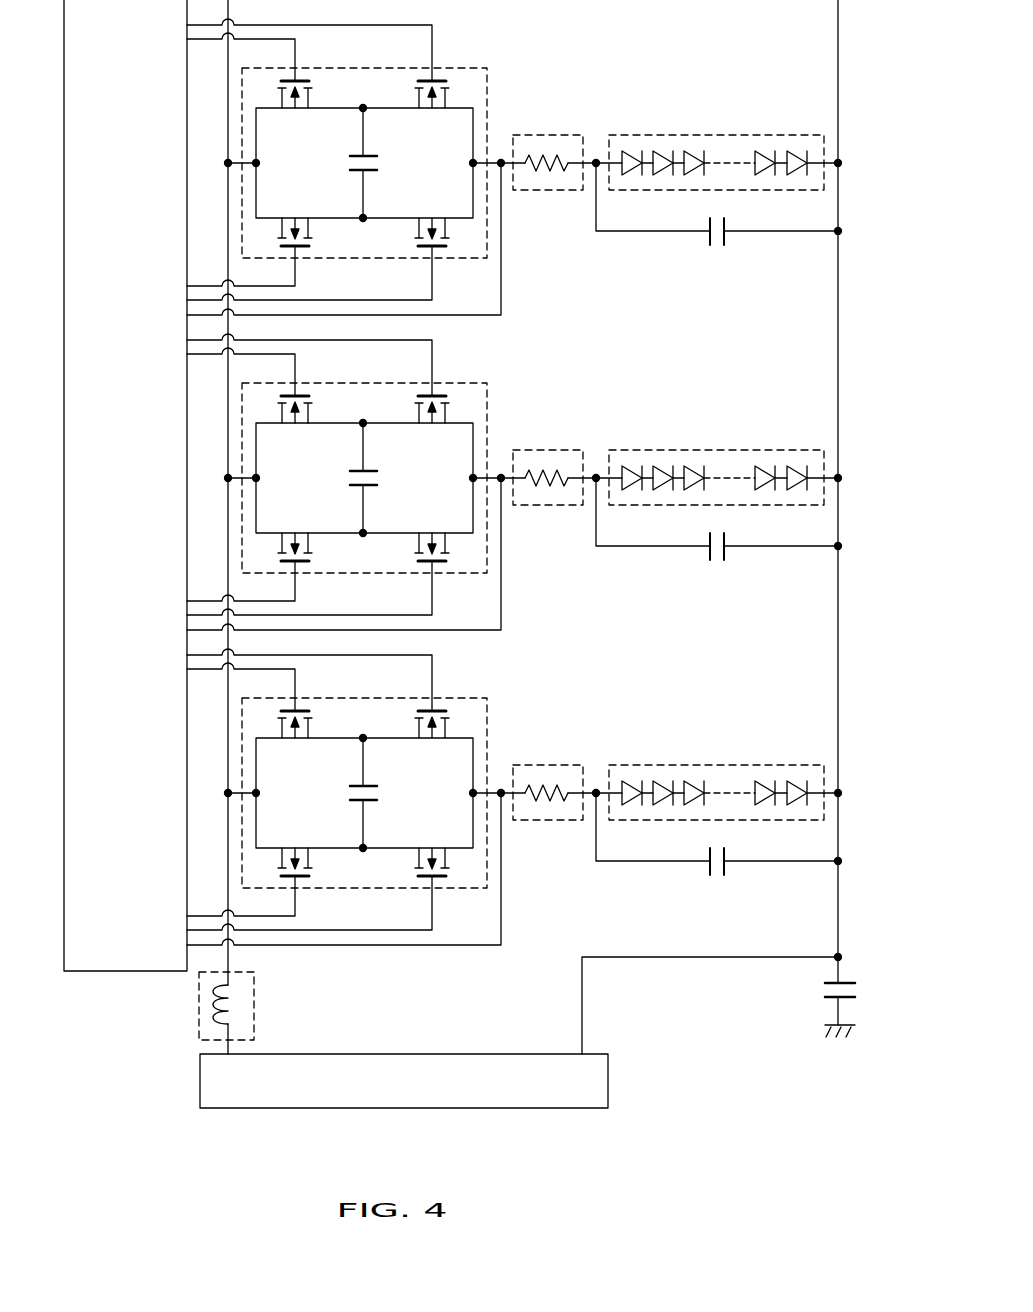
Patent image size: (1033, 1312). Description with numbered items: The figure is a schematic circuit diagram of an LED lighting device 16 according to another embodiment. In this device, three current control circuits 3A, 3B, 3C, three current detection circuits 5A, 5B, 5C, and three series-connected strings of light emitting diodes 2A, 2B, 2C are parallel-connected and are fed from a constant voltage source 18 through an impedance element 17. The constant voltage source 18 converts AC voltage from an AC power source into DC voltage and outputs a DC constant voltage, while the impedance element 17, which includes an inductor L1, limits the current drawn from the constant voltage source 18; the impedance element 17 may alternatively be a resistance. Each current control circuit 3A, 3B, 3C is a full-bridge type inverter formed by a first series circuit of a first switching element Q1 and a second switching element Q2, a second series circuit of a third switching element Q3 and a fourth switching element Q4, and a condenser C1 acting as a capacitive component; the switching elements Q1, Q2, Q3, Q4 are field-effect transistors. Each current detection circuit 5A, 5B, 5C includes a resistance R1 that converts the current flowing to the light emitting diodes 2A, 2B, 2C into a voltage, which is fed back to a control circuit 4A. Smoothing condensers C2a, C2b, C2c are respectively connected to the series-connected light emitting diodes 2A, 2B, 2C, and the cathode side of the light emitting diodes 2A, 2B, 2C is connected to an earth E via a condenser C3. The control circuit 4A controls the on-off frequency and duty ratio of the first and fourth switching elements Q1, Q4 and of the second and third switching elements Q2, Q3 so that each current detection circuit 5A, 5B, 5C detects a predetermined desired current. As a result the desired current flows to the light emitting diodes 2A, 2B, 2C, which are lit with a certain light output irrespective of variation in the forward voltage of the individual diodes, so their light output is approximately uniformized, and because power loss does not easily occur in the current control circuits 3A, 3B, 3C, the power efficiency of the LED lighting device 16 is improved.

The control circuit 4A is at (64, 31).
The LED lighting device 16 is at (655, 59).
The current control circuit 3A is at (384, 697).
The current control circuit 3B is at (384, 382).
The current control circuit 3C is at (384, 67).
The first switching element Q1 is at (312, 227).
The second switching element Q2 is at (448, 227).
The third switching element Q3 is at (312, 100).
The fourth switching element Q4 is at (448, 100).
The condenser C1 is at (356, 168).
The current detection circuit 5A is at (545, 763).
The current detection circuit 5B is at (545, 448).
The current detection circuit 5C is at (545, 133).
The resistance R1 is at (540, 167).
The light emitting diodes 2A is at (733, 763).
The light emitting diodes 2B is at (733, 448).
The light emitting diodes 2C is at (733, 133).
The smoothing condenser C2a is at (710, 873).
The smoothing condenser C2b is at (710, 558).
The smoothing condenser C2c is at (710, 243).
The impedance element 17 is at (255, 1006).
The inductor L1 is at (213, 1022).
The constant voltage source 18 is at (608, 1080).
The condenser C3 is at (832, 998).
The earth E is at (832, 1033).